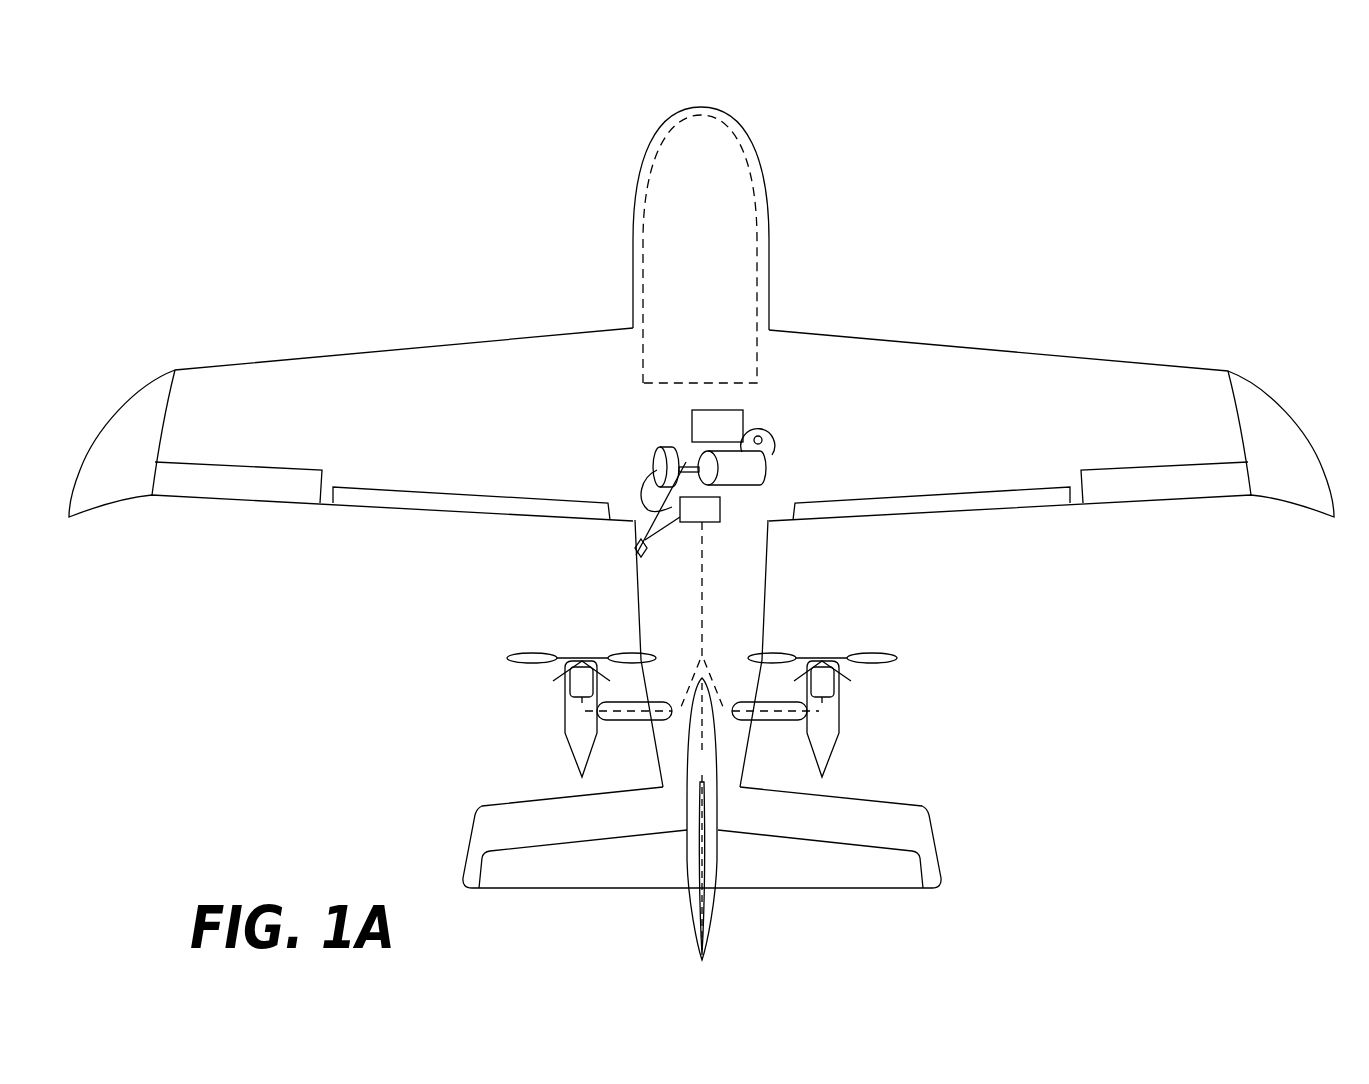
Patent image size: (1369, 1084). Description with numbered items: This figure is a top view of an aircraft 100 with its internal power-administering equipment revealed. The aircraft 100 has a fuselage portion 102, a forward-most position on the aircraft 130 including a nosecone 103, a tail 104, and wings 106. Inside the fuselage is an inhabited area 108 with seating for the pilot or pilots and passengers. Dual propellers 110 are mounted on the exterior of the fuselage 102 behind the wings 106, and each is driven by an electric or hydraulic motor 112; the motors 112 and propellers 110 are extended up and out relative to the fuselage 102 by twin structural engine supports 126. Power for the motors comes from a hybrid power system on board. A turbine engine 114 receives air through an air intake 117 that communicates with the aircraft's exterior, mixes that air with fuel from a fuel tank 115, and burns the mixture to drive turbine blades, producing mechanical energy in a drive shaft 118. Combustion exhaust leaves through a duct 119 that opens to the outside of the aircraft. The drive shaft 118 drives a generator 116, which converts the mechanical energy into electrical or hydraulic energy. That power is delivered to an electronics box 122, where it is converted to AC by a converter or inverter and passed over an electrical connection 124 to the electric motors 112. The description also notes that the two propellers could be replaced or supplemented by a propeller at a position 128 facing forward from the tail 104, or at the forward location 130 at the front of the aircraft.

The aircraft 100 is at (412, 612).
The fuselage portion 102 is at (784, 293).
The nosecone 103 is at (680, 102).
The tail 104 is at (674, 908).
The wings 106 is at (328, 357).
The inhabited area 108 is at (760, 229).
The propellers 110 is at (527, 653).
The electric or hydraulic motors 112 is at (567, 690).
The turbine engine 114 is at (752, 486).
The fuel tank 115 is at (718, 410).
The generator 116 is at (657, 449).
The air intake 117 is at (754, 442).
The drive shaft 118 is at (684, 462).
The duct 119 is at (634, 545).
The electronics box 122 is at (642, 493).
The electrical connection 124 is at (702, 573).
The twin structural engine supports 126 is at (615, 700).
The position facing forward from the tail 128 is at (702, 726).
The forward-most position on the aircraft 130 is at (699, 103).